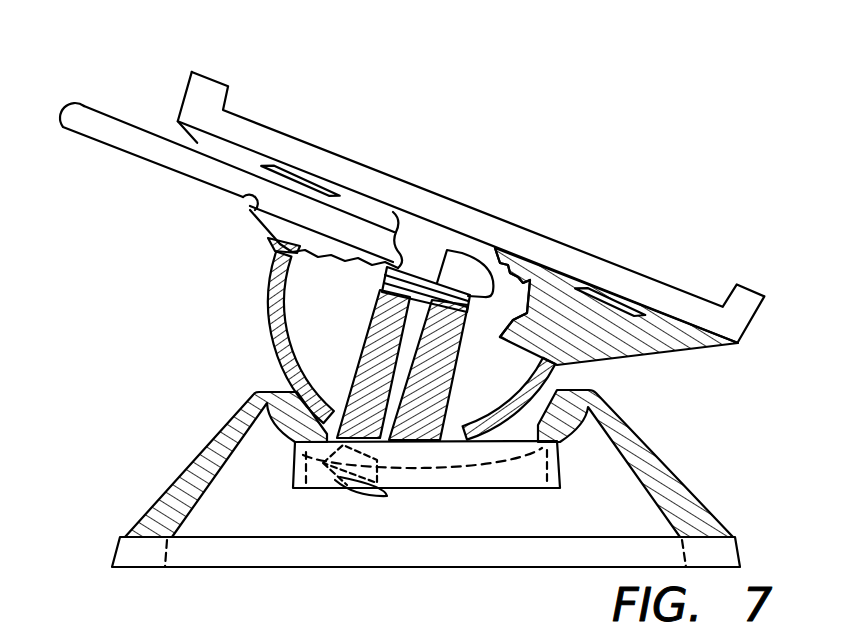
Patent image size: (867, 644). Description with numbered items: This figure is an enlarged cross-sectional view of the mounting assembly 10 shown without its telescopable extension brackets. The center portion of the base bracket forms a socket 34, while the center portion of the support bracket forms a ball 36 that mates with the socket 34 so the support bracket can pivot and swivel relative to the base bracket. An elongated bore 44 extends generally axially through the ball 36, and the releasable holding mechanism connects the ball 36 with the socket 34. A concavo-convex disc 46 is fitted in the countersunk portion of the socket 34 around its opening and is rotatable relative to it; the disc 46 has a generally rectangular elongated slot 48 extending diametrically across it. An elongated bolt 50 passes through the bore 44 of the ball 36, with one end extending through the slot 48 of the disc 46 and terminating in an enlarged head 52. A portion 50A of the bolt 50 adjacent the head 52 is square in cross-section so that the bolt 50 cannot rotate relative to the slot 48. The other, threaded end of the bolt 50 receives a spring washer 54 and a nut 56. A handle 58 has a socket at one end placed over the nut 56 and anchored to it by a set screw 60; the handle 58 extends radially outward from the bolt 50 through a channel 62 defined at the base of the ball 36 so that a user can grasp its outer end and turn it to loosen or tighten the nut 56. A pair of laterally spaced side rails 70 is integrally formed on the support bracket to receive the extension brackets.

The mounting assembly 10 is at (704, 228).
The socket 34 is at (557, 365).
The ball 36 is at (270, 306).
The elongated bore 44 is at (436, 389).
The concavo-convex disc 46 is at (562, 472).
The elongated slot 48 is at (472, 488).
The elongated bolt 50 is at (385, 379).
The square portion of the bolt 50A is at (333, 487).
The enlarged head 52 is at (372, 494).
The spring washer 54 is at (412, 265).
The nut 56 is at (453, 262).
The handle 58 is at (163, 163).
The set screw 60 is at (530, 262).
The channel 62 is at (247, 198).
The side rails 70 is at (213, 98).